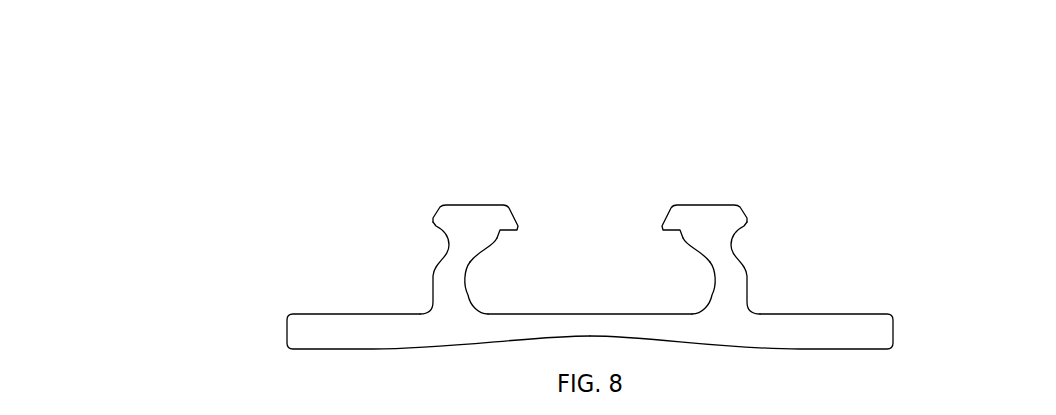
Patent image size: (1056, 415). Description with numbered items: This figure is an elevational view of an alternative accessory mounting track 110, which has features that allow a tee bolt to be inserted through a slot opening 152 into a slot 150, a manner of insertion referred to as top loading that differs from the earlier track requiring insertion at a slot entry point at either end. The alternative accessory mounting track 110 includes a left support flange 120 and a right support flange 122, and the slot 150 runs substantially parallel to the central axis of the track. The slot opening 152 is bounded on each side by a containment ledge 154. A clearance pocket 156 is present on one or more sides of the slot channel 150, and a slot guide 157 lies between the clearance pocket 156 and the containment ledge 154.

The alternative accessory mounting track 110 is at (815, 139).
The left support flange 120 is at (327, 302).
The right support flange 122 is at (842, 303).
The slot 150 is at (581, 270).
The slot opening 152 is at (615, 179).
The containment ledge 154 is at (500, 212).
The clearance pocket 156 is at (728, 272).
The slot guide 157 is at (707, 242).